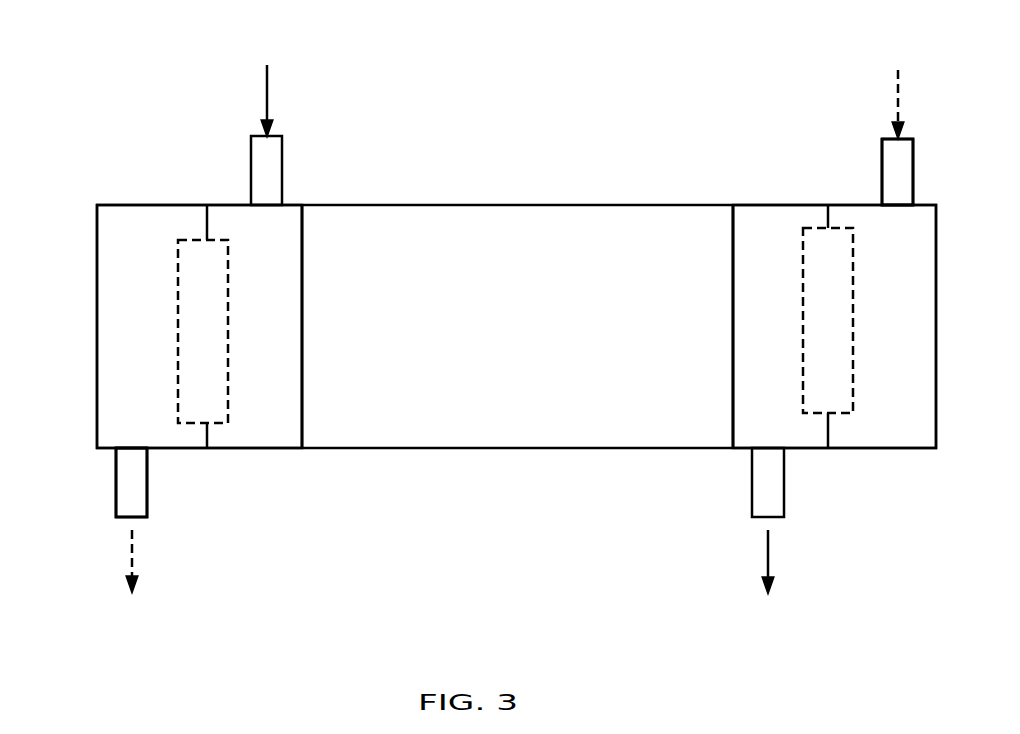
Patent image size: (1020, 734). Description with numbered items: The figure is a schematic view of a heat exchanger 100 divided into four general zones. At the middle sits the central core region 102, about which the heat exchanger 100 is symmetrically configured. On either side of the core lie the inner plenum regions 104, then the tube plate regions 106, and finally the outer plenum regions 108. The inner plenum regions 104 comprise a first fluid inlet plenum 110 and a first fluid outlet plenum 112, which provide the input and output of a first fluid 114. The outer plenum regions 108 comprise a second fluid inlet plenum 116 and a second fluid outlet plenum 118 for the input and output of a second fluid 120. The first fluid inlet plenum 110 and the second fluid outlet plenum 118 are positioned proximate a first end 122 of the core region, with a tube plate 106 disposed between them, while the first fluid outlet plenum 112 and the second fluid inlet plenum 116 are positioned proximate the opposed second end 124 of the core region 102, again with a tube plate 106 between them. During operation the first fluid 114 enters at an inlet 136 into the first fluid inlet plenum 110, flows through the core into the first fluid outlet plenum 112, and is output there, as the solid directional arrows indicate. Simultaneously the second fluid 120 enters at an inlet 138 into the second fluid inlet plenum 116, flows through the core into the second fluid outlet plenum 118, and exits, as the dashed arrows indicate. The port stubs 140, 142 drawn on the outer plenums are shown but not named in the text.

The heat exchanger 100 is at (165, 170).
The central core region 102 is at (552, 220).
The inner plenum regions 104 is at (287, 237).
The tube plate regions 106 is at (215, 397).
The outer plenum regions 108 is at (927, 228).
The first fluid inlet plenum 110 is at (352, 291).
The first fluid outlet plenum 112 is at (711, 361).
The first fluid 114 is at (265, 92).
The second fluid inlet plenum 116 is at (921, 116).
The second fluid outlet plenum 118 is at (95, 523).
The second fluid 120 is at (896, 95).
The first end 122 is at (408, 192).
The second end 124 is at (722, 194).
The inlet 136 is at (272, 148).
The inlet 138 is at (770, 507).
The second inlet port 140 is at (893, 167).
The second outlet port 142 is at (135, 485).